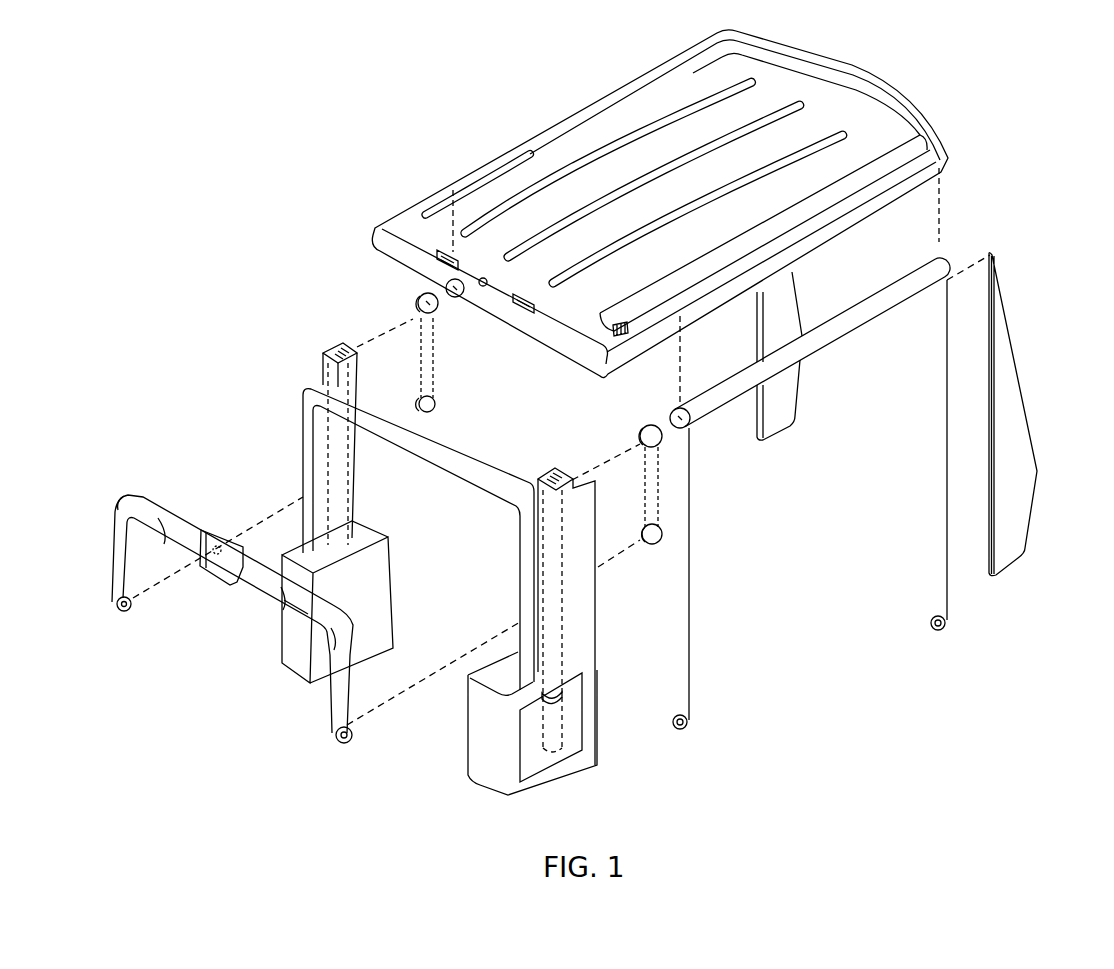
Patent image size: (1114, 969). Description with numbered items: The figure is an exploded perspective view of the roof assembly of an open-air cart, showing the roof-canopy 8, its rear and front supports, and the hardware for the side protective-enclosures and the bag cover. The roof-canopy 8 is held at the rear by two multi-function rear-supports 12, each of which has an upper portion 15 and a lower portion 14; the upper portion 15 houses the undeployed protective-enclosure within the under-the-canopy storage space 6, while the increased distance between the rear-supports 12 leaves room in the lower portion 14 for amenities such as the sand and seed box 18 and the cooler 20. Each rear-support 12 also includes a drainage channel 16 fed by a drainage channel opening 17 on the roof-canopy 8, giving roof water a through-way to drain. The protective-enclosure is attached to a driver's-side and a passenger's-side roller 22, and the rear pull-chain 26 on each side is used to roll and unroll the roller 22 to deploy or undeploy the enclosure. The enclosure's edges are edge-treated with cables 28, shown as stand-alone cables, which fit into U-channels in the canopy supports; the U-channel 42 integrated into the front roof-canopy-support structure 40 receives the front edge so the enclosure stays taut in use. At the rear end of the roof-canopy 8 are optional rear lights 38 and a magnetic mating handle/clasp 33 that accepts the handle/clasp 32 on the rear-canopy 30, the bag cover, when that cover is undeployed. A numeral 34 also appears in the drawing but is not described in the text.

The under-the-canopy protective-enclosure storage space 6 is at (693, 330).
The roof-canopy 8 is at (513, 147).
The multi-function roof-canopy rear-support 12 is at (262, 417).
The lower portion of rear roof-canopy-support 14 is at (395, 605).
The upper portion of rear-canopy-support 15 is at (358, 483).
The drainage channel 16 is at (564, 633).
The drainage channel opening 17 is at (625, 336).
The sand and seed box 18 is at (583, 692).
The cooler 20 is at (282, 663).
The roller 22 is at (453, 297).
The rear pull-chain 26 is at (434, 380).
The cable on edge of protective-enclosure 28 is at (690, 667).
The rear-canopy 30 is at (243, 597).
The handle/clasp on rear-canopy 32 is at (212, 528).
The mating handle/clasp 33 is at (484, 288).
The handle pivot end 34 is at (345, 745).
The roof-canopy rear light 38 is at (435, 258).
The front roof-canopy-support structure 40 is at (803, 300).
The U-channel to hold front edge of protective-enclosure 42 is at (983, 572).